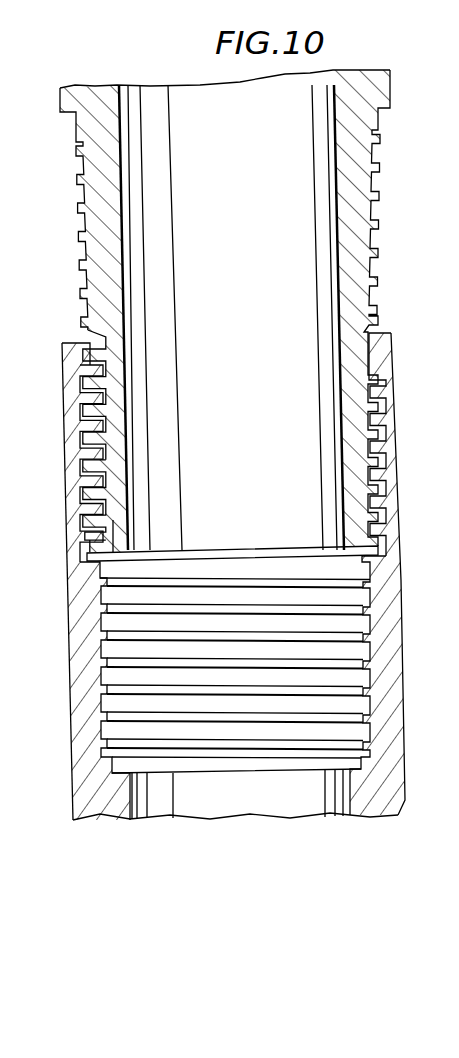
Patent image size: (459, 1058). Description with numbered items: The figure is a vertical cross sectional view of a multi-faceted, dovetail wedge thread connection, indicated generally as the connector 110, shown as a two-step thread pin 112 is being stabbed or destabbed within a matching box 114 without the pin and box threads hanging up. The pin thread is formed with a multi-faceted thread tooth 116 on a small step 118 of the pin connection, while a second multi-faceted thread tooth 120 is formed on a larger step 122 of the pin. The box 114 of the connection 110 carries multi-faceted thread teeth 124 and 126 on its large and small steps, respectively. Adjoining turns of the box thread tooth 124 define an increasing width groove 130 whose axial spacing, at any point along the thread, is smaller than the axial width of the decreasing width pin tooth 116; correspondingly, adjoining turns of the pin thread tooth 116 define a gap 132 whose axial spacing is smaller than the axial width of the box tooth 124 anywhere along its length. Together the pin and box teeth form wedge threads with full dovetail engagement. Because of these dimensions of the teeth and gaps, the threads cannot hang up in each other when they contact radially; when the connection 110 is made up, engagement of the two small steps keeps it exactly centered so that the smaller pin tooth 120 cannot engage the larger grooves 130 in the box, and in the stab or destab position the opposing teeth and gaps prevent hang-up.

The connector 110 is at (60, 797).
The two-step thread pin 112 is at (410, 100).
The box 114 is at (58, 710).
The multi-faceted thread tooth 116 is at (112, 504).
The small step 118 is at (121, 370).
The second multi-faceted thread tooth 120 is at (83, 262).
The larger step 122 is at (112, 194).
The multi-faceted thread tooth of the box 124 is at (80, 390).
The multi-faceted thread tooth of the box 126 is at (102, 646).
The increasing width groove 130 is at (83, 481).
The gap 132 is at (112, 470).